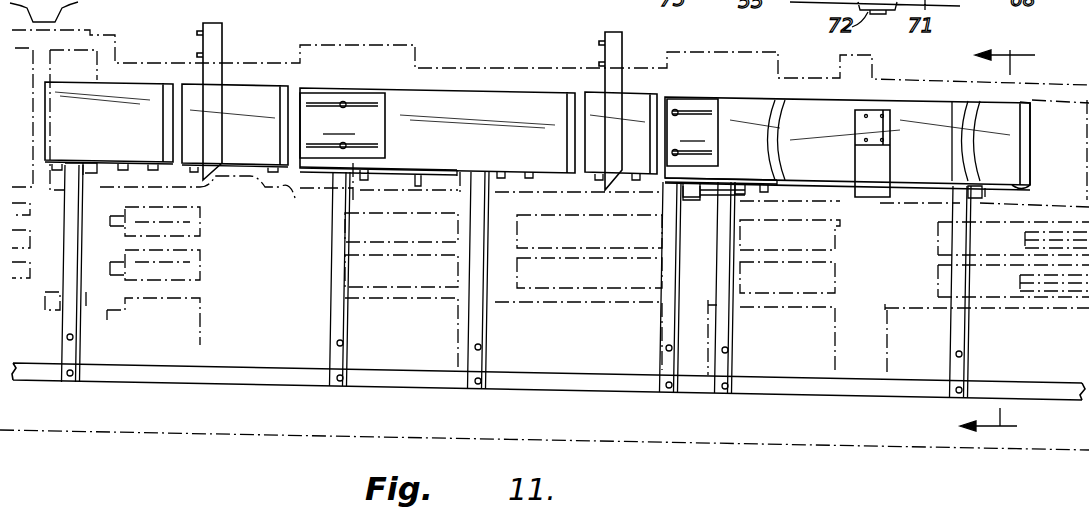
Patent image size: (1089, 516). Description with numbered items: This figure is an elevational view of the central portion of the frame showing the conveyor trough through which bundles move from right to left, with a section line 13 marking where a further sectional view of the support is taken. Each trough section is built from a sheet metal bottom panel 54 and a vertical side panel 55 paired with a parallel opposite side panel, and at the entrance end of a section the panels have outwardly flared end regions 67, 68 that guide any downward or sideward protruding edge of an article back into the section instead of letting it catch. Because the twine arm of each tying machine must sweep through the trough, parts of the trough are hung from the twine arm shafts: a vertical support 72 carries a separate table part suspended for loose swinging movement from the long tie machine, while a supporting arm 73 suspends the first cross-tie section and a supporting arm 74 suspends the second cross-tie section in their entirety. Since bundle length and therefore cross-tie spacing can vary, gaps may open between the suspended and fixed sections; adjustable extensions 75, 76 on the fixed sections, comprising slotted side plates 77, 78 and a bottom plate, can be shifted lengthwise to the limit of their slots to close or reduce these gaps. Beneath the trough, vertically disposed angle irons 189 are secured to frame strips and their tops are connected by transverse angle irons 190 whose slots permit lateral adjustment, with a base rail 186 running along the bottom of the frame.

The section line 13 is at (1014, 244).
The sheet metal bottom panel 54 is at (733, 176).
The vertical side panel 55 is at (743, 100).
The outwardly flared end region 67 is at (1022, 180).
The outwardly flared end region 68 is at (1023, 145).
The vertical support 72 is at (858, 128).
The supporting arm 73 is at (612, 50).
The supporting arm 74 is at (218, 40).
The adjustable extension 75 is at (693, 98).
The adjustable extension 76 is at (348, 84).
The slotted side plate 77 is at (693, 129).
The slotted side plate 78 is at (338, 122).
The base rail 186 is at (794, 390).
The vertical angle iron 189 is at (740, 242).
The transverse angle iron 190 is at (740, 189).